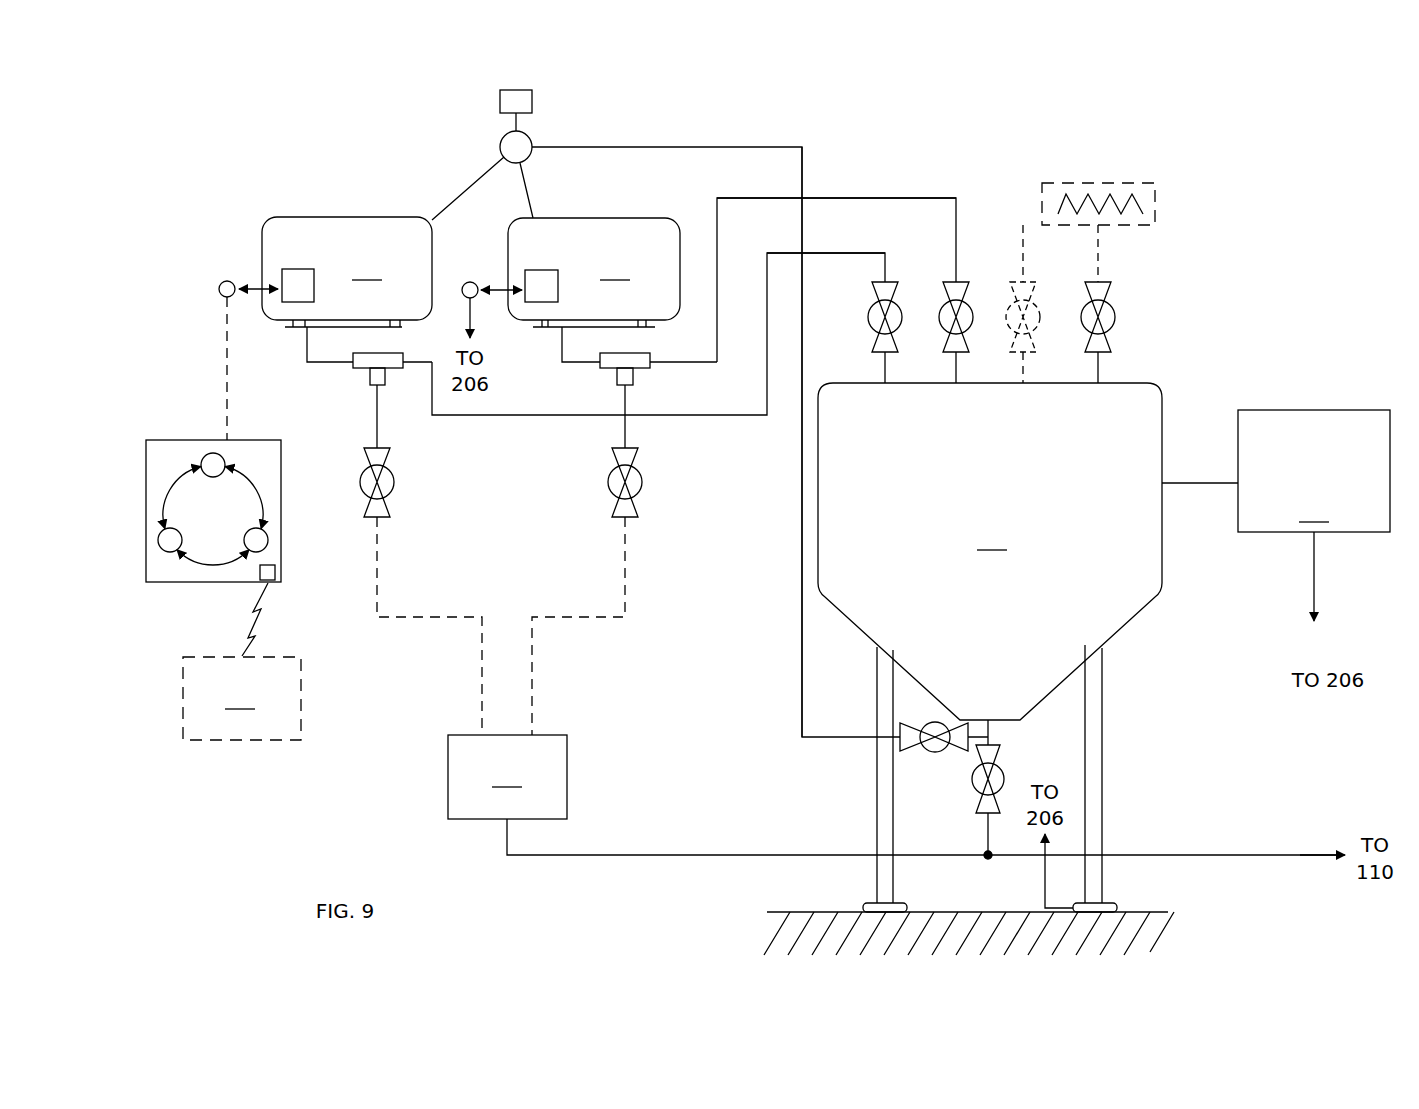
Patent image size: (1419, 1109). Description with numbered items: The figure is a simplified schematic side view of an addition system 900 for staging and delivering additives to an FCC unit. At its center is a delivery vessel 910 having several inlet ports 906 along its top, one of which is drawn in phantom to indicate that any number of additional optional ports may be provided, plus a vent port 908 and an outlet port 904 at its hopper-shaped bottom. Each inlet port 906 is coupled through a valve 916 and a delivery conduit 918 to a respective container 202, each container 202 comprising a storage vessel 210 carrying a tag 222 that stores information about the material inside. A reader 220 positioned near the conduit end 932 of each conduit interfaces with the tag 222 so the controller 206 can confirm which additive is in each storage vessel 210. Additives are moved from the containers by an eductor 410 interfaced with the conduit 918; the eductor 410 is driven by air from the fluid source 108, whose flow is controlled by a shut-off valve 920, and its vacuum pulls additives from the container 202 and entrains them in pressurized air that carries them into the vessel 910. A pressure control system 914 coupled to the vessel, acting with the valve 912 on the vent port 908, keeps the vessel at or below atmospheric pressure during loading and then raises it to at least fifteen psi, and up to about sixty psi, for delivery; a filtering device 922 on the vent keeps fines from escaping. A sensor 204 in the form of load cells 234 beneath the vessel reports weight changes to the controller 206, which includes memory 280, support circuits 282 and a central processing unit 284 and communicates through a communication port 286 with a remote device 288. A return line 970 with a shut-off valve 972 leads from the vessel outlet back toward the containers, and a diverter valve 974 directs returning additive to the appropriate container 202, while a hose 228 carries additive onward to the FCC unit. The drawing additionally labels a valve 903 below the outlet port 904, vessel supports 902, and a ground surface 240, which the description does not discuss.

The diverter valve 974 is at (536, 132).
The container 202 is at (351, 204).
The storage vessel 210 is at (491, 268).
The tag 222 is at (297, 268).
The reader 220 is at (225, 279).
The sensor 204 is at (285, 328).
The conduit end 932 is at (306, 341).
The eductor 410 is at (380, 353).
The shut-off valve 920 is at (394, 482).
The controller 206 is at (292, 452).
The support circuits 282 is at (212, 453).
The central processing unit 284 is at (268, 540).
The memory 280 is at (170, 553).
The communication port 286 is at (276, 572).
The remote device 288 is at (242, 698).
The fluid source 108 is at (507, 777).
The delivery vessel 910 is at (990, 551).
The addition system 900 is at (1259, 339).
The valves 916 is at (868, 317).
The delivery conduit 918 is at (886, 266).
The inlet ports 906 is at (882, 385).
The vent port 908 is at (1095, 385).
The valve 912 is at (1131, 305).
The filtering device 922 is at (1157, 200).
The pressure control system 914 is at (1314, 471).
The outlet port 904 is at (983, 714).
The outlet valve 903 is at (1005, 779).
The shut-off valve 972 is at (929, 752).
The return line 970 is at (801, 672).
The vessel support legs 902 is at (1104, 752).
The load cells 234 is at (906, 908).
The hose 228 is at (1300, 853).
The ground surface 240 is at (809, 911).